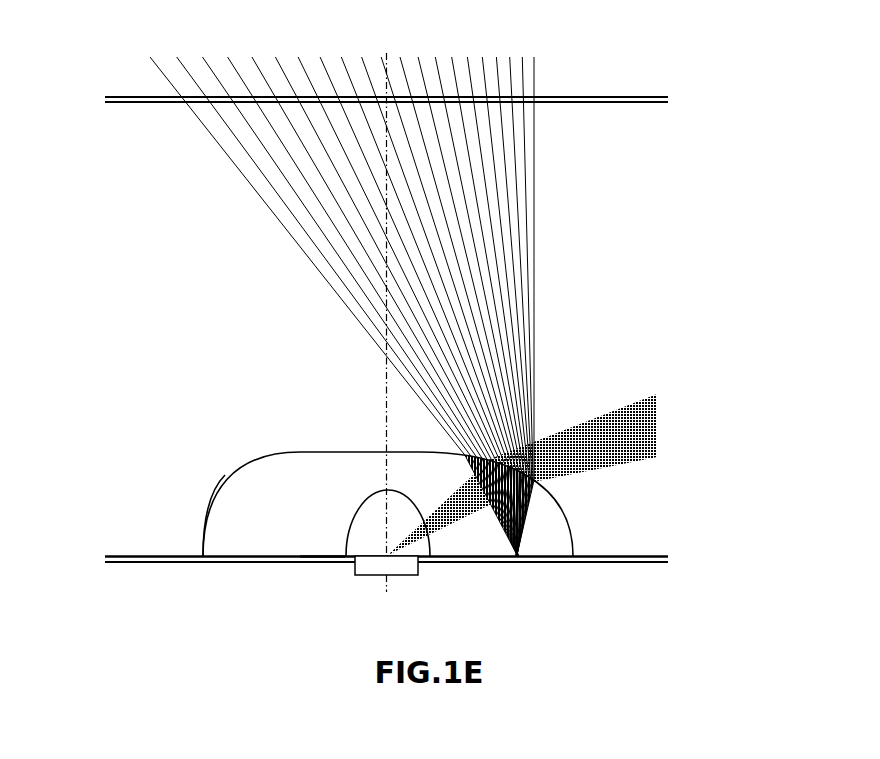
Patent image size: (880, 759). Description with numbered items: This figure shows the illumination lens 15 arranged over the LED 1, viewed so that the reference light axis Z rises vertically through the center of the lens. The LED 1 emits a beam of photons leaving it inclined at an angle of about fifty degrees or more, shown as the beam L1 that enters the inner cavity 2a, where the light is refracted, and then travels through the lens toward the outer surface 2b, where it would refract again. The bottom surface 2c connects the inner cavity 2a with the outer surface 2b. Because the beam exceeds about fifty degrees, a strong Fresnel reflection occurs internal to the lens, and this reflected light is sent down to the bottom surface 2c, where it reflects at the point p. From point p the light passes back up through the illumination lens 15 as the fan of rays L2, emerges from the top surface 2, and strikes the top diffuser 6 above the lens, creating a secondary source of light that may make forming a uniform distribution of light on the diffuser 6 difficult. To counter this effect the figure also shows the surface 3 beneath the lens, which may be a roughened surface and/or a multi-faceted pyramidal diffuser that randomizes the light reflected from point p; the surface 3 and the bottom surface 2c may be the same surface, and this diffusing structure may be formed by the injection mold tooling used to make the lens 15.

The LED 1 is at (403, 577).
The top surface 2 is at (322, 451).
The inner cavity 2a is at (350, 560).
The outer surface 2b is at (204, 528).
The bottom surface 2c is at (313, 558).
The surface 3 is at (553, 565).
The top diffuser 6 is at (606, 104).
The illumination lens 15 is at (386, 484).
The first light L1 is at (656, 394).
The second light L2 is at (536, 239).
The point P p is at (527, 550).
The light axis Z is at (386, 312).